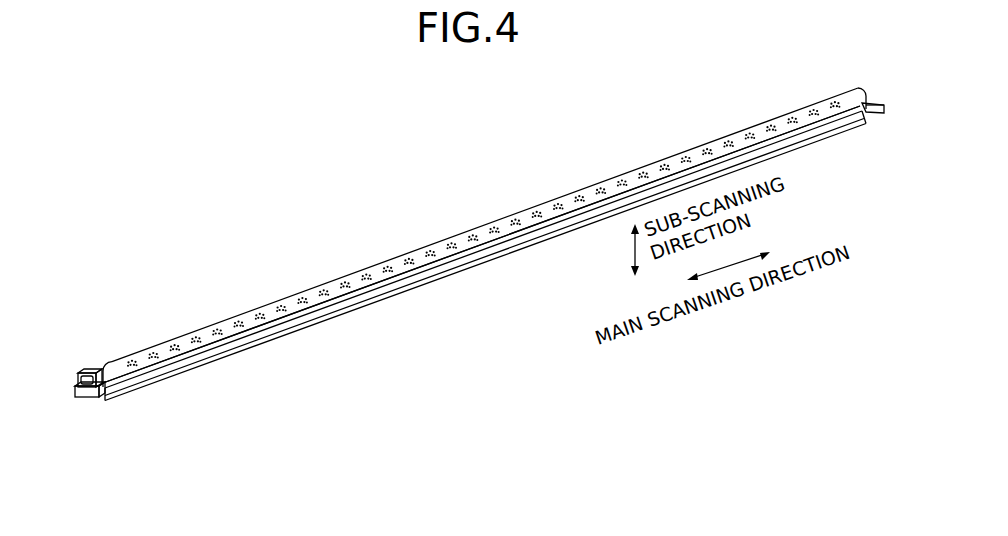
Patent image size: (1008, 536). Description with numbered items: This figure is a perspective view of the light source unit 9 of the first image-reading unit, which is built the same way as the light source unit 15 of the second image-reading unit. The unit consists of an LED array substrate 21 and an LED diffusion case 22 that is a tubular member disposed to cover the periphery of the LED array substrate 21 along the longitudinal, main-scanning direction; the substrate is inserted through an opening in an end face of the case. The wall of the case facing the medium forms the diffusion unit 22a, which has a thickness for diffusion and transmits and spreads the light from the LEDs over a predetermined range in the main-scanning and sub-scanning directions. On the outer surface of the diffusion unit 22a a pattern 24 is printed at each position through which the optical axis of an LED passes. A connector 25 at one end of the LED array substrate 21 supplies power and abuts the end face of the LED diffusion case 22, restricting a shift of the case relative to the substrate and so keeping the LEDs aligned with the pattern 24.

The light source unit 9 is at (90, 296).
The light source unit 15 is at (86, 277).
The LED array substrate 21 is at (96, 401).
The LED diffusion case 22 is at (498, 212).
The diffusion unit 22a is at (354, 286).
The pattern 24 is at (253, 307).
The connector 25 is at (100, 368).